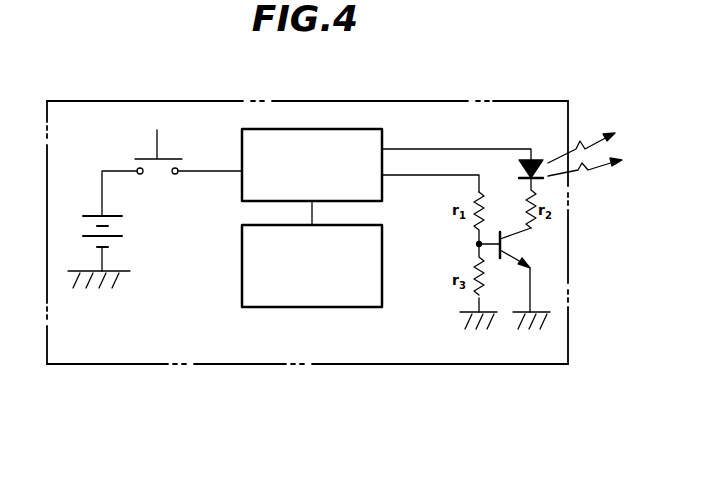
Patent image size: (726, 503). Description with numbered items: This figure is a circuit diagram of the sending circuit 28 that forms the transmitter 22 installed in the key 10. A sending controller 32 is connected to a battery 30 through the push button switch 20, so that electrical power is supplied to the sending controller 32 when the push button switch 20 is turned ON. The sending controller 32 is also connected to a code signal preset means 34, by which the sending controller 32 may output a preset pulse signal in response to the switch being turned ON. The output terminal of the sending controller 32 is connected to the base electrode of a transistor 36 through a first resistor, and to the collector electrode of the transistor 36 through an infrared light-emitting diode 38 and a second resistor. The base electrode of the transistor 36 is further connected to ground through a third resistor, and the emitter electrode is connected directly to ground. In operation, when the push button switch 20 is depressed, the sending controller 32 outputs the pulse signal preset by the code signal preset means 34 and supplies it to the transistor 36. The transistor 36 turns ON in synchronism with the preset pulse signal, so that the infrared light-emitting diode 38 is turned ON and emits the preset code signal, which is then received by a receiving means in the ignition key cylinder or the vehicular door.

The key 10 is at (370, 364).
The push button switch 20 is at (146, 157).
The transmitter 22 is at (258, 365).
The sending circuit 28 is at (205, 277).
The battery 30 is at (113, 252).
The sending controller 32 is at (242, 140).
The code signal preset means 34 is at (350, 308).
The transistor 36 is at (497, 238).
The infrared light-emitting diode 38 is at (536, 158).